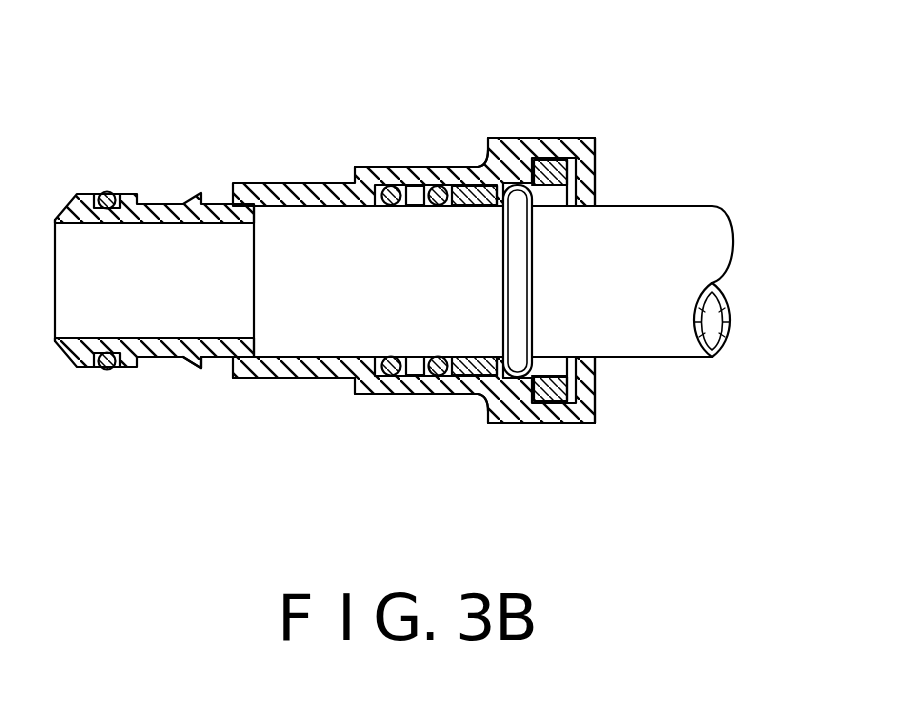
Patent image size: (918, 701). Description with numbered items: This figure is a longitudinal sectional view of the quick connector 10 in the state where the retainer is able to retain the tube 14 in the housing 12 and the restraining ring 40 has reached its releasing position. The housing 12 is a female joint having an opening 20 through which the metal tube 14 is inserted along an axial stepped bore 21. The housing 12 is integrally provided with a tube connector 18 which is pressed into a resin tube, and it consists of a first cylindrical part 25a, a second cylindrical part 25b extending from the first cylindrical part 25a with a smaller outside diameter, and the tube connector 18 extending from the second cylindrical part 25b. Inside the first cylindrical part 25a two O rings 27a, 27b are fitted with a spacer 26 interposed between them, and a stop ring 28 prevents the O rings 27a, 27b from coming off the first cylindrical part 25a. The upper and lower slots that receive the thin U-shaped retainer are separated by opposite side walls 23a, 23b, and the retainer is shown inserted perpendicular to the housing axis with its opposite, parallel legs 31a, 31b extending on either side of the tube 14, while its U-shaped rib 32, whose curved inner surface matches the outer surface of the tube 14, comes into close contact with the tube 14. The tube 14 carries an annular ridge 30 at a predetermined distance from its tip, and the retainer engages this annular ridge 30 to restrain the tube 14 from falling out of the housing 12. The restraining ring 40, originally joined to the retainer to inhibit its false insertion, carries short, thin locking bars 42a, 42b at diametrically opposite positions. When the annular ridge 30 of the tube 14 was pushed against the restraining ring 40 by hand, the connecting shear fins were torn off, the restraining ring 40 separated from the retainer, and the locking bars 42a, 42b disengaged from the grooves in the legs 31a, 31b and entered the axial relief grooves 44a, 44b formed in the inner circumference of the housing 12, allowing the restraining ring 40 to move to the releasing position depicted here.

The quick connector 10 is at (690, 94).
The housing 12 is at (442, 166).
The tube 14 is at (683, 221).
The tube connector 18 is at (222, 358).
The opening 20 is at (583, 371).
The axial stepped bore 21 is at (214, 291).
The side wall 23a is at (567, 428).
The side wall 23b is at (566, 137).
The first cylindrical part 25a is at (372, 397).
The second cylindrical part 25b is at (299, 378).
The spacer 26 is at (390, 173).
The O ring 27a is at (386, 204).
The O ring 27b is at (430, 184).
The stop ring 28 is at (468, 208).
The annular ridge 30 is at (521, 293).
The leg 31a is at (569, 401).
The leg 31b is at (570, 172).
The U-shaped rib 32 is at (551, 199).
The restraining ring 40 is at (499, 198).
The locking bar 42a is at (522, 425).
The locking bar 42b is at (523, 178).
The relief groove 44a is at (490, 413).
The relief groove 44b is at (485, 170).